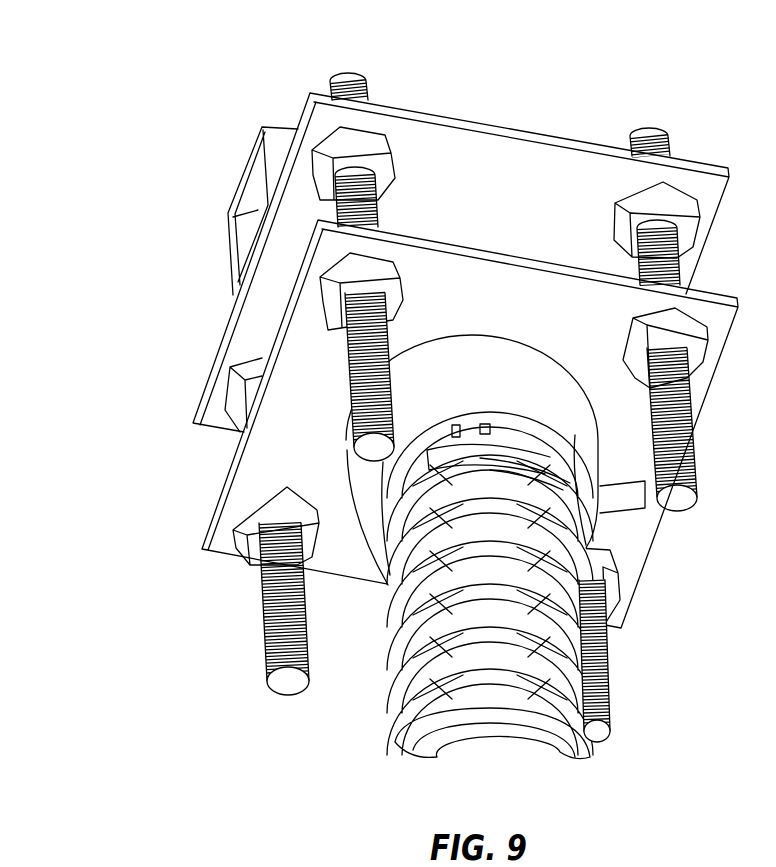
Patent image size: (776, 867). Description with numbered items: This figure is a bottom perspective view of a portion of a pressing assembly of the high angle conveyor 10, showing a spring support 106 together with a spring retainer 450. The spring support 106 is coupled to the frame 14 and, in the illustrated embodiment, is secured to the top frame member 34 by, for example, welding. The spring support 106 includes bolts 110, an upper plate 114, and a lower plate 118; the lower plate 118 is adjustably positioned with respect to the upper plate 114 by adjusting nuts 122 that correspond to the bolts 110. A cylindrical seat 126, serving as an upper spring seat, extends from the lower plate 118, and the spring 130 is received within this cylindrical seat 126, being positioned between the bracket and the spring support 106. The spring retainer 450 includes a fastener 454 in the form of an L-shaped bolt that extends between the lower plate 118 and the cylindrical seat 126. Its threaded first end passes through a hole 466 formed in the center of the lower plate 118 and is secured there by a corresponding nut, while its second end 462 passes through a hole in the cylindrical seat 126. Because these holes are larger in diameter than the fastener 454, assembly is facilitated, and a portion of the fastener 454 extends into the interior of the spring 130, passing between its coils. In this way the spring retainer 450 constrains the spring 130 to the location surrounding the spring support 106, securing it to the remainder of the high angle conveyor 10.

The high angle conveyor 10 is at (471, 80).
The frame 14 is at (278, 128).
The top frame member 34 is at (249, 190).
The spring support 106 is at (451, 399).
The bolts 110 is at (377, 215).
The upper plate 114 is at (558, 142).
The lower plate 118 is at (253, 462).
The nuts 122 is at (330, 278).
The cylindrical seat 126 is at (447, 367).
The spring 130 is at (410, 700).
The spring retainer 450 is at (528, 522).
The fastener 454 is at (553, 480).
The second end 462 is at (672, 507).
The hole 466 is at (497, 427).